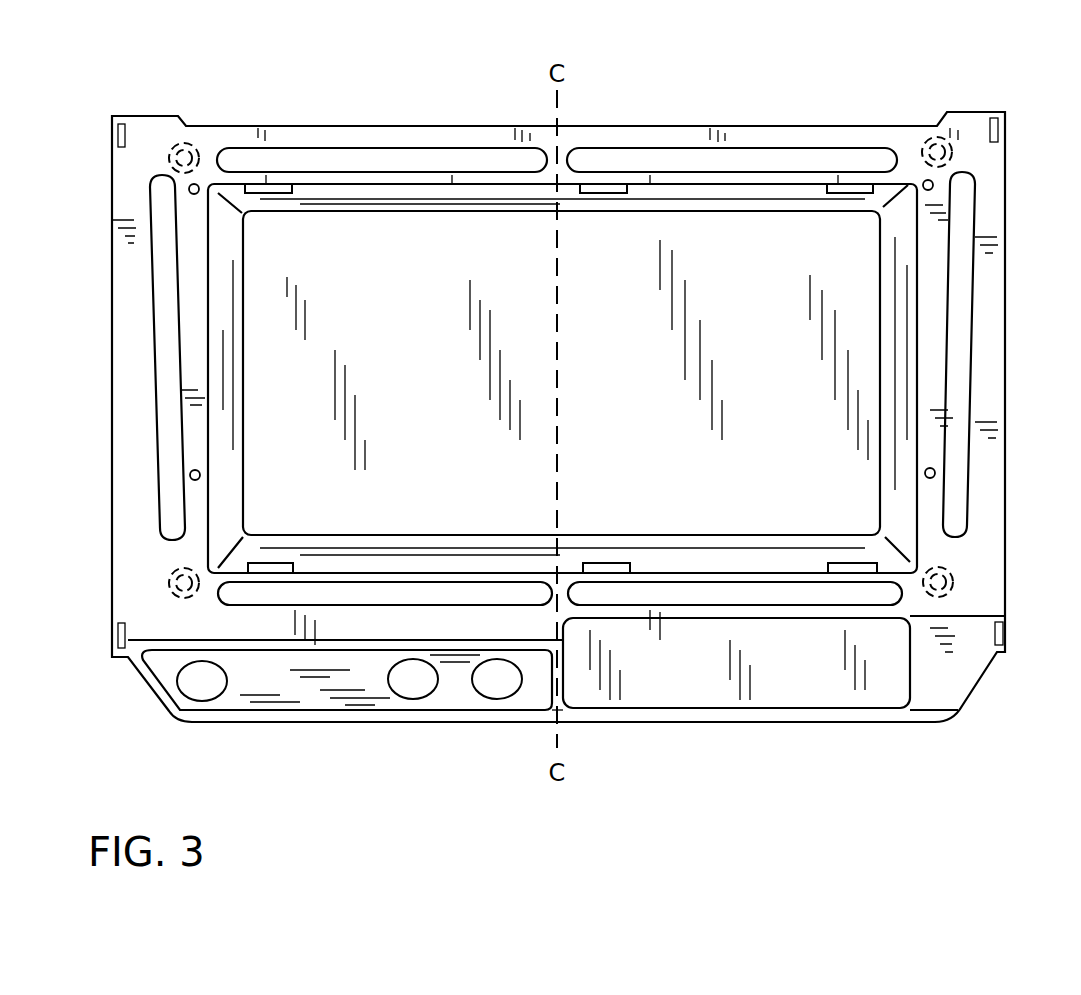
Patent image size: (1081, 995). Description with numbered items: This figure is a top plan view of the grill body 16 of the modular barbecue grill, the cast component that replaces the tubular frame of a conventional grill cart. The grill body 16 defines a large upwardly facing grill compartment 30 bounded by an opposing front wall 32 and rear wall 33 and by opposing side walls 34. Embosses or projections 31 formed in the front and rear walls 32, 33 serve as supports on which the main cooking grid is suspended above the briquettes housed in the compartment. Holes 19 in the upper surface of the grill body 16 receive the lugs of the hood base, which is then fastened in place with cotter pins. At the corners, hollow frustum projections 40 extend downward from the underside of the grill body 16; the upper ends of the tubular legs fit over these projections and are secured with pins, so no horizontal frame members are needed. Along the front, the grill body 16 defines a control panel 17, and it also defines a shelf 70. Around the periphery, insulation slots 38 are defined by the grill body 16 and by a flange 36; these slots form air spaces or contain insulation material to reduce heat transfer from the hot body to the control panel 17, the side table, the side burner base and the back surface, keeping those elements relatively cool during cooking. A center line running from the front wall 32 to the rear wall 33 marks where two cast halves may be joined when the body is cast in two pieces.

The grill body 16 is at (684, 119).
The control panel 17 is at (297, 690).
The holes 19 is at (933, 183).
The grill compartment 30 is at (683, 225).
The embosses or projections 31 is at (272, 193).
The front wall 32 is at (422, 548).
The rear wall 33 is at (523, 200).
The side walls 34 is at (903, 323).
The flange 36 is at (780, 133).
The insulation slots 38 is at (287, 165).
The frustum projections 40 is at (176, 143).
The shelf 70 is at (752, 678).